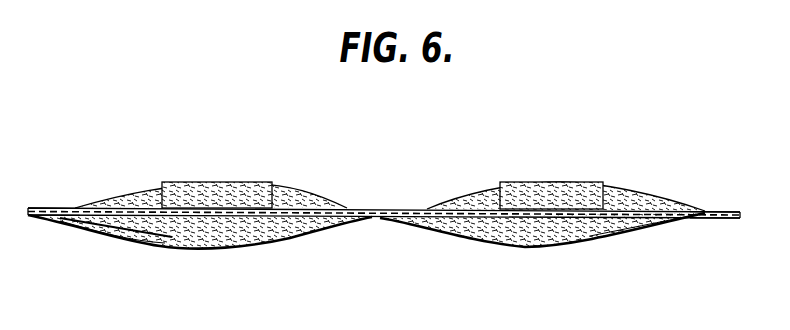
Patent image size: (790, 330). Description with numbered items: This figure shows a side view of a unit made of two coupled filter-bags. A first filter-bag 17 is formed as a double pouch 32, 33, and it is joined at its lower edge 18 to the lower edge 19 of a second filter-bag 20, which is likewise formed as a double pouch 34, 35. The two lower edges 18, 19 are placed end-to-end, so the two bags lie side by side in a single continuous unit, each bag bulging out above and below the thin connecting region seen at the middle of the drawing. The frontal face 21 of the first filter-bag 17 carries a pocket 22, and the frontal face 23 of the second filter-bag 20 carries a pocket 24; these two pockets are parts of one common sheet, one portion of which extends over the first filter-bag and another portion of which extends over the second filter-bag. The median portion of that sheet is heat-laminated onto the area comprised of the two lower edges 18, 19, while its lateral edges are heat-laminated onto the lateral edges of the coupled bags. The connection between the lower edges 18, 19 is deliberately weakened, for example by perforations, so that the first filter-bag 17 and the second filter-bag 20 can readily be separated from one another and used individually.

The first filter-bag 17 is at (130, 239).
The lower edge of first filter-bag 18 is at (350, 209).
The lower edge of second filter-bag 19 is at (405, 211).
The second filter-bag 20 is at (478, 249).
The frontal face of first filter-bag 21 is at (53, 209).
The pocket of first filter-bag 22 is at (180, 182).
The frontal face of second filter-bag 23 is at (707, 212).
The pocket of second filter-bag 24 is at (553, 182).
The pouch of first filter-bag 32 is at (212, 233).
The pouch of first filter-bag 33 is at (133, 206).
The pouch of second filter-bag 34 is at (587, 237).
The pouch of second filter-bag 35 is at (612, 207).